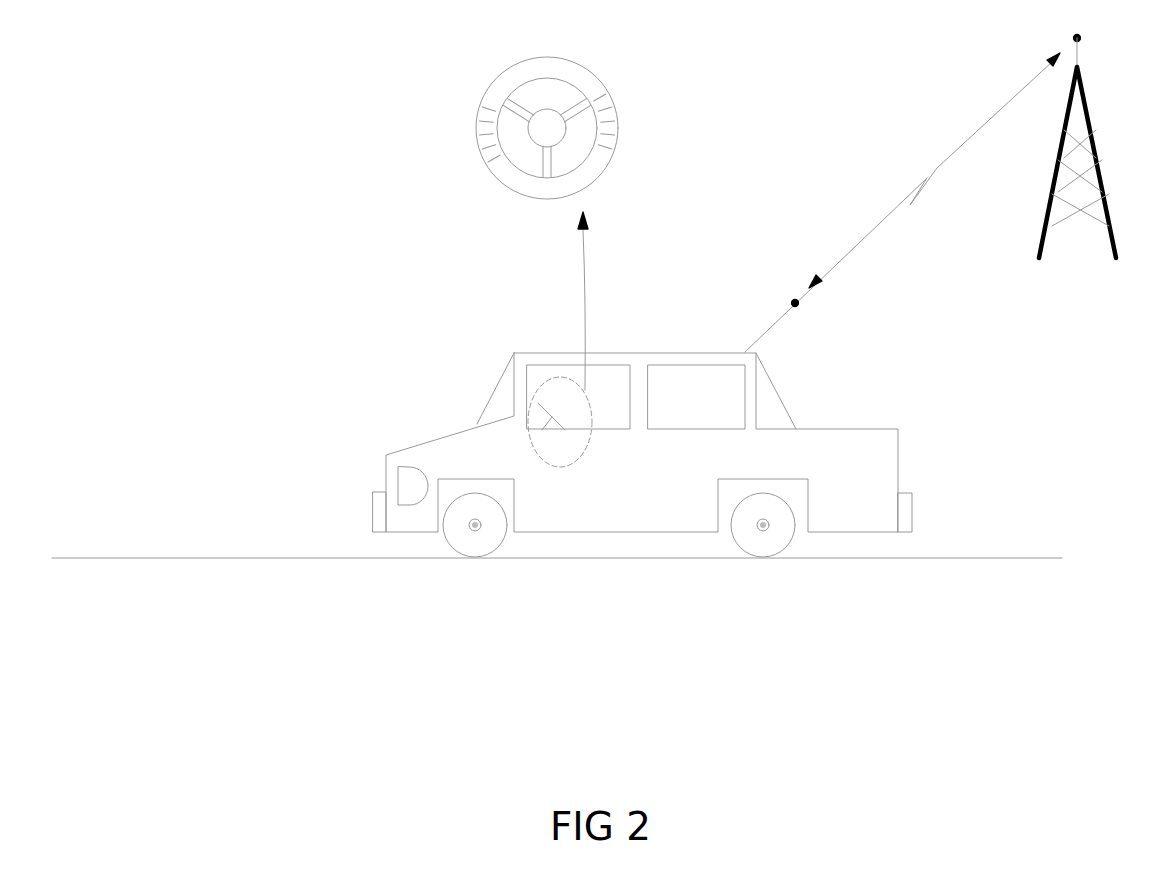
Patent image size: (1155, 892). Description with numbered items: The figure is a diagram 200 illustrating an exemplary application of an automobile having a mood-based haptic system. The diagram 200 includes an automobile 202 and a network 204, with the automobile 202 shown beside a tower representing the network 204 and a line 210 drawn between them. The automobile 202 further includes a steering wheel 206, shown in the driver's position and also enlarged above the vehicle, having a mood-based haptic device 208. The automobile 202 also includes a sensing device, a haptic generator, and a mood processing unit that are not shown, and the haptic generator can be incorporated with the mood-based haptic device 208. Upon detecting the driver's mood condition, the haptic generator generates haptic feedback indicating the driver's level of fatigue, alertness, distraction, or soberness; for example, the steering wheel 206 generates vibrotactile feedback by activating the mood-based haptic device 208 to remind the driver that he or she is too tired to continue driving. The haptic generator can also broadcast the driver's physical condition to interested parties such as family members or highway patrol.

The diagram 200 is at (92, 57).
The automobile 202 is at (416, 444).
The network 204 is at (1040, 238).
The steering wheel 206 is at (560, 467).
The mood-based haptic device 208 is at (477, 120).
The wireless communication link 210 is at (887, 206).